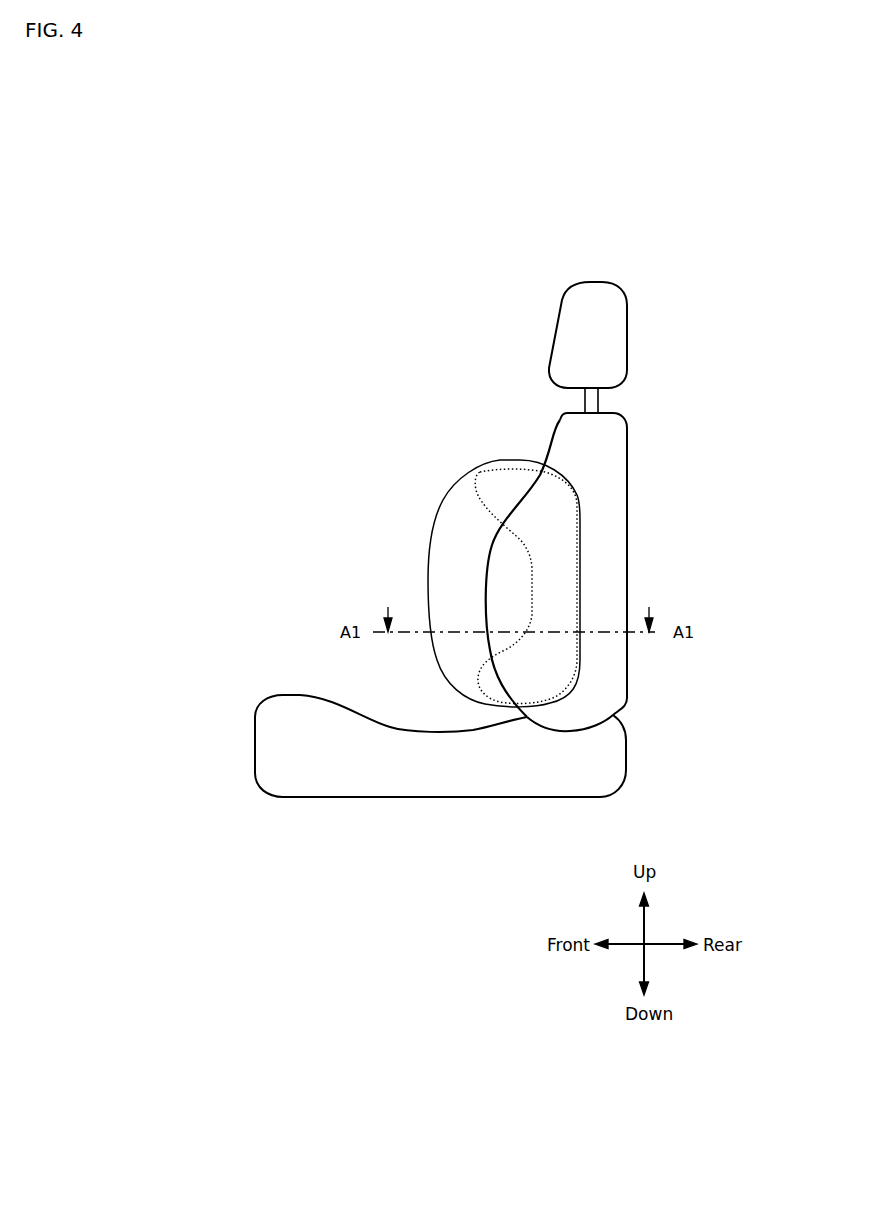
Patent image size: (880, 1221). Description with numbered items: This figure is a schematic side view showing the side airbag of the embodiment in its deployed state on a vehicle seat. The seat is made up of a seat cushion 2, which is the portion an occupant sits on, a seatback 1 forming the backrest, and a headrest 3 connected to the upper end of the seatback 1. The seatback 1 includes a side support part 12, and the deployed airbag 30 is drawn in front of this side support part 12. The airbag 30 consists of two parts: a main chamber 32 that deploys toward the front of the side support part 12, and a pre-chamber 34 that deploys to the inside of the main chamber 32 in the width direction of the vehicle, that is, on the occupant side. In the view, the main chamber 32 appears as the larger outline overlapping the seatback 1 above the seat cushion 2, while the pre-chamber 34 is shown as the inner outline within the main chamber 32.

The seatback 1 is at (617, 435).
The seat cushion 2 is at (427, 790).
The headrest 3 is at (618, 322).
The side support part 12 is at (500, 555).
The airbag 30 is at (450, 544).
The main chamber 32 is at (453, 487).
The pre-chamber 34 is at (503, 463).